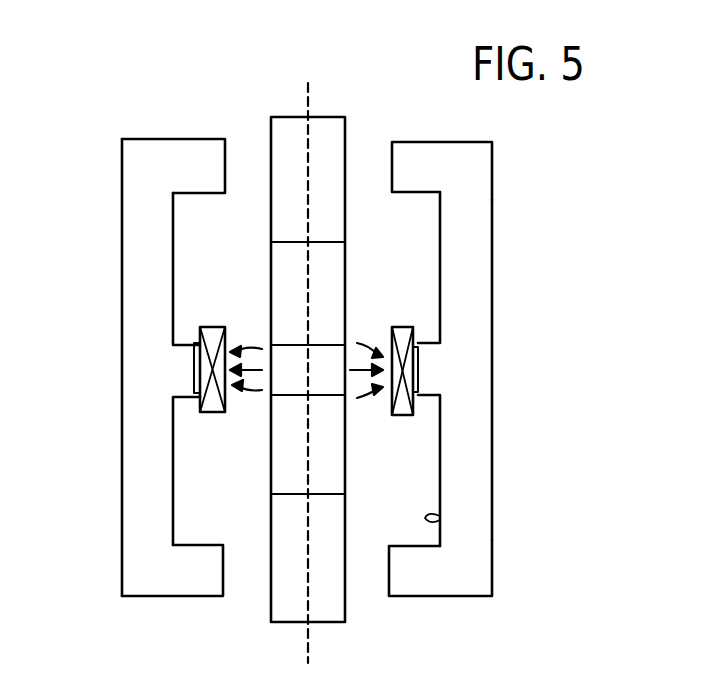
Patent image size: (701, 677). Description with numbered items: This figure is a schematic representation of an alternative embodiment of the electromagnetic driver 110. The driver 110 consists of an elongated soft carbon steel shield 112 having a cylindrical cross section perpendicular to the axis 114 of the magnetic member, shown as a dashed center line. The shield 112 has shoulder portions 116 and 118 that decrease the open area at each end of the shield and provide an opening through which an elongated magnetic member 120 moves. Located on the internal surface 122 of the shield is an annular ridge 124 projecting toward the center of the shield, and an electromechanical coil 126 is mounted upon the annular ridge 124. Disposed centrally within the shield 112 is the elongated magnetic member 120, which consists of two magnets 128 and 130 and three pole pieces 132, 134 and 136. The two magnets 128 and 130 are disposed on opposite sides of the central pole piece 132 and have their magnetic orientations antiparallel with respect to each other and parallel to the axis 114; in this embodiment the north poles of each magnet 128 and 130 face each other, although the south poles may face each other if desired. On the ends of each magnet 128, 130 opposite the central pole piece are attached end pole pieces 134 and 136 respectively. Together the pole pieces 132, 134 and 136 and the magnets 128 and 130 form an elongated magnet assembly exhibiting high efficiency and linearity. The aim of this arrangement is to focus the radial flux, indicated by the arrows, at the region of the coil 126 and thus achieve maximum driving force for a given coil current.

The driver 110 is at (503, 460).
The shield 112 is at (492, 352).
The axis 114 is at (308, 98).
The shoulder portion 116 is at (385, 583).
The shoulder portion 118 is at (392, 150).
The elongated magnetic member 120 is at (360, 277).
The internal surface 122 is at (440, 517).
The annular ridge 124 is at (428, 397).
The electromechanical coil 126 is at (405, 326).
The magnet 128 is at (270, 456).
The magnet 130 is at (270, 267).
The central pole piece 132 is at (270, 378).
The end pole piece 134 is at (280, 221).
The end pole piece 136 is at (270, 537).